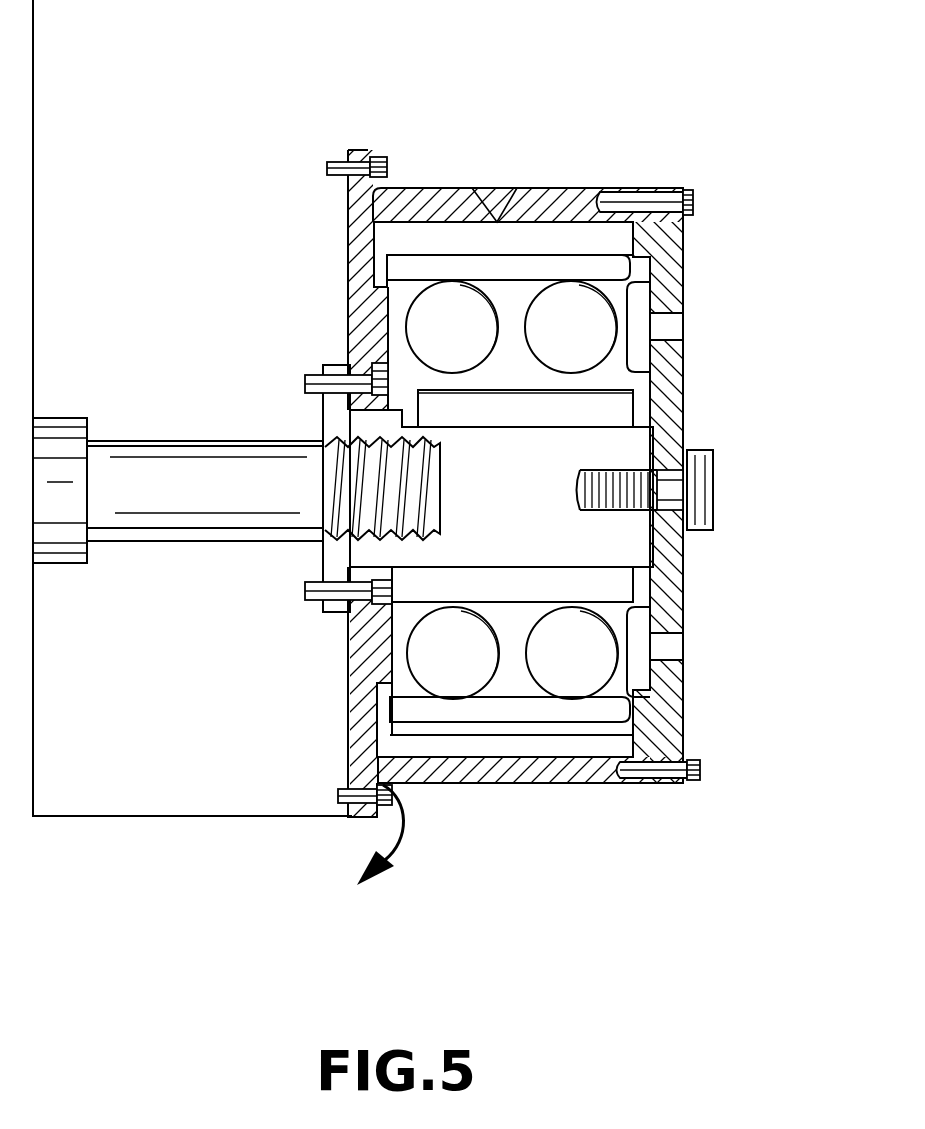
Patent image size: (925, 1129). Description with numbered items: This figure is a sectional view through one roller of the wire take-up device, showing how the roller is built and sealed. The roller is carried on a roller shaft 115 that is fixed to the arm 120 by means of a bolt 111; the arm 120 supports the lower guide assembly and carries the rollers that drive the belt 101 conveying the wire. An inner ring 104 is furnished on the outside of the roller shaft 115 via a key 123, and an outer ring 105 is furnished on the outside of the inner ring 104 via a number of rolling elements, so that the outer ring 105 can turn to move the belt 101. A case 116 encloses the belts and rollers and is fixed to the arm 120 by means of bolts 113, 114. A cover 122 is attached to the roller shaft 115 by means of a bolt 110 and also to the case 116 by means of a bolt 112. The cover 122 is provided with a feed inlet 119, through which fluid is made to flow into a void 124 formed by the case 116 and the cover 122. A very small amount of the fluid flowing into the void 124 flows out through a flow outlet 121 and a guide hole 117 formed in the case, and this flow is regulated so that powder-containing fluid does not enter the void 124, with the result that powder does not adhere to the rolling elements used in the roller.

The belt 101 is at (527, 733).
The inner ring 104 is at (650, 378).
The outer ring 105 is at (688, 274).
The bolt 110 is at (700, 497).
The bolt 111 is at (68, 430).
The bolt 112 is at (688, 195).
The bolt 113 is at (305, 386).
The bolt 114 is at (377, 157).
The roller shaft 115 is at (322, 557).
The case 116 is at (563, 783).
The guide hole 117 is at (515, 200).
The feed inlet 119 is at (667, 330).
The arm 120 is at (127, 778).
The flow outlet 121 is at (413, 783).
The cover 122 is at (670, 700).
The key 123 is at (430, 397).
The void 124 is at (432, 240).